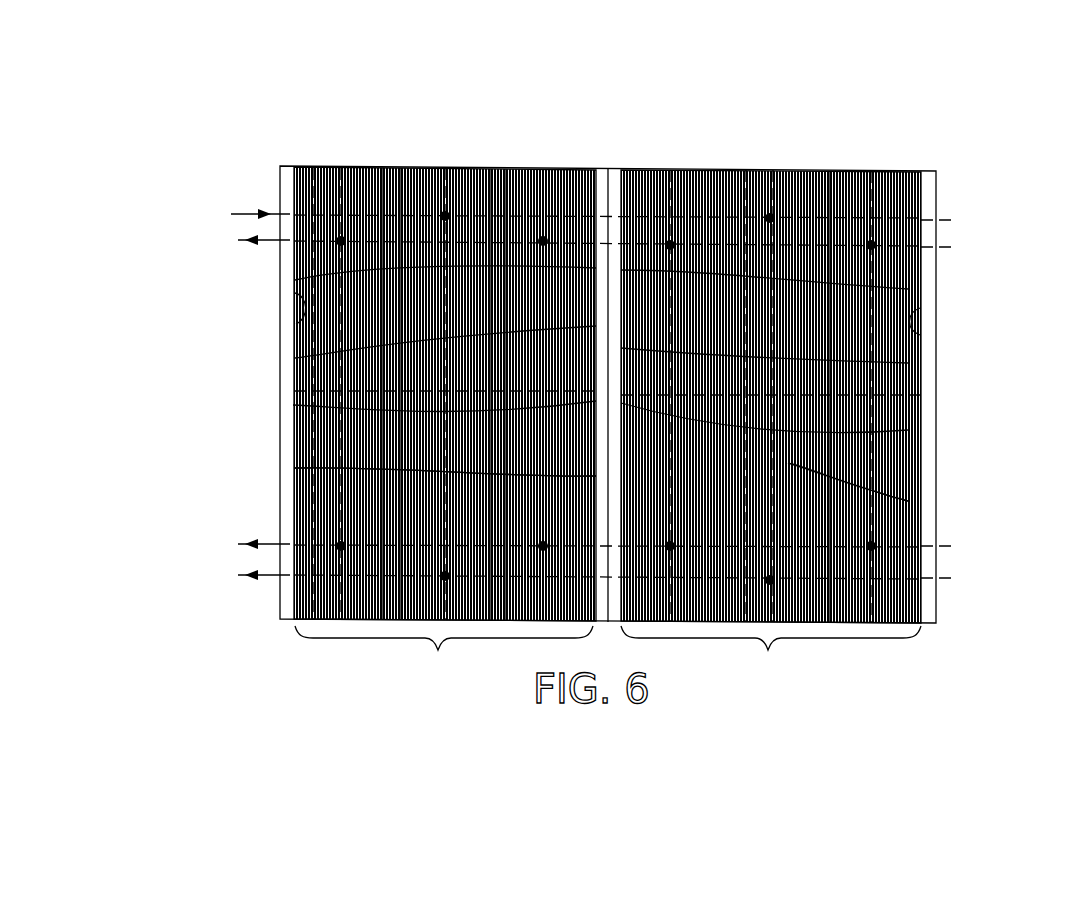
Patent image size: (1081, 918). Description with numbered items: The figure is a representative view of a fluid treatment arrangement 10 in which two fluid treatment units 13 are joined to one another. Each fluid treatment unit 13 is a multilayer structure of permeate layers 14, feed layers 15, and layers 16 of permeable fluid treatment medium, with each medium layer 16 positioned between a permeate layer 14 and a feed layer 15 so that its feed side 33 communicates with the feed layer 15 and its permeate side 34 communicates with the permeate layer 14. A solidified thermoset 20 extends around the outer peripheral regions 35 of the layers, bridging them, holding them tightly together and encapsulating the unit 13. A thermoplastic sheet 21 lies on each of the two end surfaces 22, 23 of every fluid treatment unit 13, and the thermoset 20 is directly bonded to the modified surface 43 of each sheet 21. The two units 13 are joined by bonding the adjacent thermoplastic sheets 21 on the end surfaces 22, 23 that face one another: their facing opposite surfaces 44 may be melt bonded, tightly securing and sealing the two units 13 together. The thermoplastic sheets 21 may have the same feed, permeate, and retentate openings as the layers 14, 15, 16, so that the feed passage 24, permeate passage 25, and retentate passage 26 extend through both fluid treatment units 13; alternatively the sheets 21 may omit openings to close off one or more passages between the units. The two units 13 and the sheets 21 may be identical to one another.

The fluid treatment arrangement 10 is at (984, 118).
The fluid treatment unit 13 is at (608, 656).
The permeate layer 14 is at (557, 172).
The feed layer 15 is at (306, 178).
The fluid treatment medium layer 16 is at (393, 182).
The thermoset 20 is at (287, 460).
The thermoplastic sheet 21 is at (278, 176).
The end surface 22 is at (285, 397).
The end surface 23 is at (900, 422).
The feed passage 24 is at (232, 206).
The permeate passage 25 is at (255, 234).
The retentate passage 26 is at (262, 570).
The feed side 33 is at (472, 182).
The permeate side 34 is at (375, 178).
The outer peripheral region 35 is at (287, 460).
The modified surface 43 is at (297, 313).
The opposite surface 44 is at (287, 350).